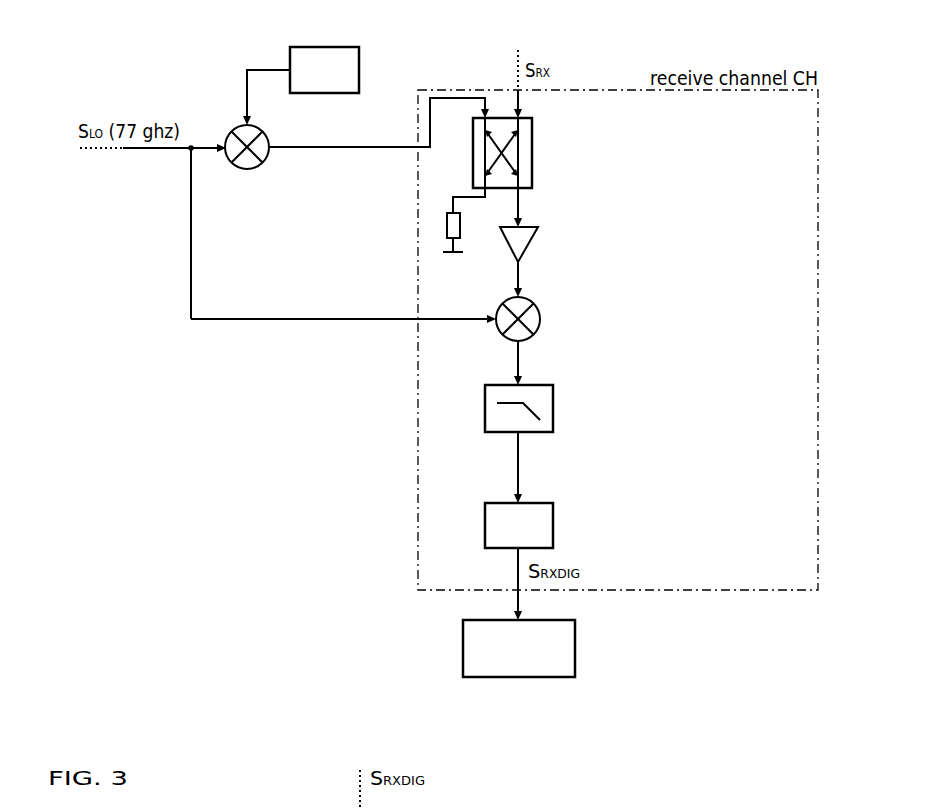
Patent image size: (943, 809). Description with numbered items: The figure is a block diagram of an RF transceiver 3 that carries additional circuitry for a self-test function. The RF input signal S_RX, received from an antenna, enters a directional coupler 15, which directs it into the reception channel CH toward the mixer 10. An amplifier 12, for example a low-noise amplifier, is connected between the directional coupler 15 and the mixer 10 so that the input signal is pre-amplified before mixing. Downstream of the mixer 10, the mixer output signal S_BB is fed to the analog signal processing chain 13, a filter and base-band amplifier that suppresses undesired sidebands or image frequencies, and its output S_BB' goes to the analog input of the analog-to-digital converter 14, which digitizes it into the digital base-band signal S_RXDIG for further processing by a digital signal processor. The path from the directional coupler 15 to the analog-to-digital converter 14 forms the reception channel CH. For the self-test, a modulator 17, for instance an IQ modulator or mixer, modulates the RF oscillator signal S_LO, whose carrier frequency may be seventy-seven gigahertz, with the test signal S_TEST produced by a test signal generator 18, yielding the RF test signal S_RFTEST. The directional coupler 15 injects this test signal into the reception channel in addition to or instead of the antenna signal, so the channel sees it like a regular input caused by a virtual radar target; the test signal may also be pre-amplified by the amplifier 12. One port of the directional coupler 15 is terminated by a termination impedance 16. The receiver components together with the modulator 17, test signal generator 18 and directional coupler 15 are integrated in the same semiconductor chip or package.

The RF transceiver 3 is at (622, 39).
The test signal generator 18 is at (359, 66).
The modulator 17 is at (256, 168).
The directional coupler 15 is at (532, 150).
The termination impedance 16 is at (415, 220).
The amplifier 12 is at (530, 246).
The mixer 10 is at (540, 319).
The analog signal processing chain 13 is at (553, 403).
The analog-to-digital converter 14 is at (553, 525).